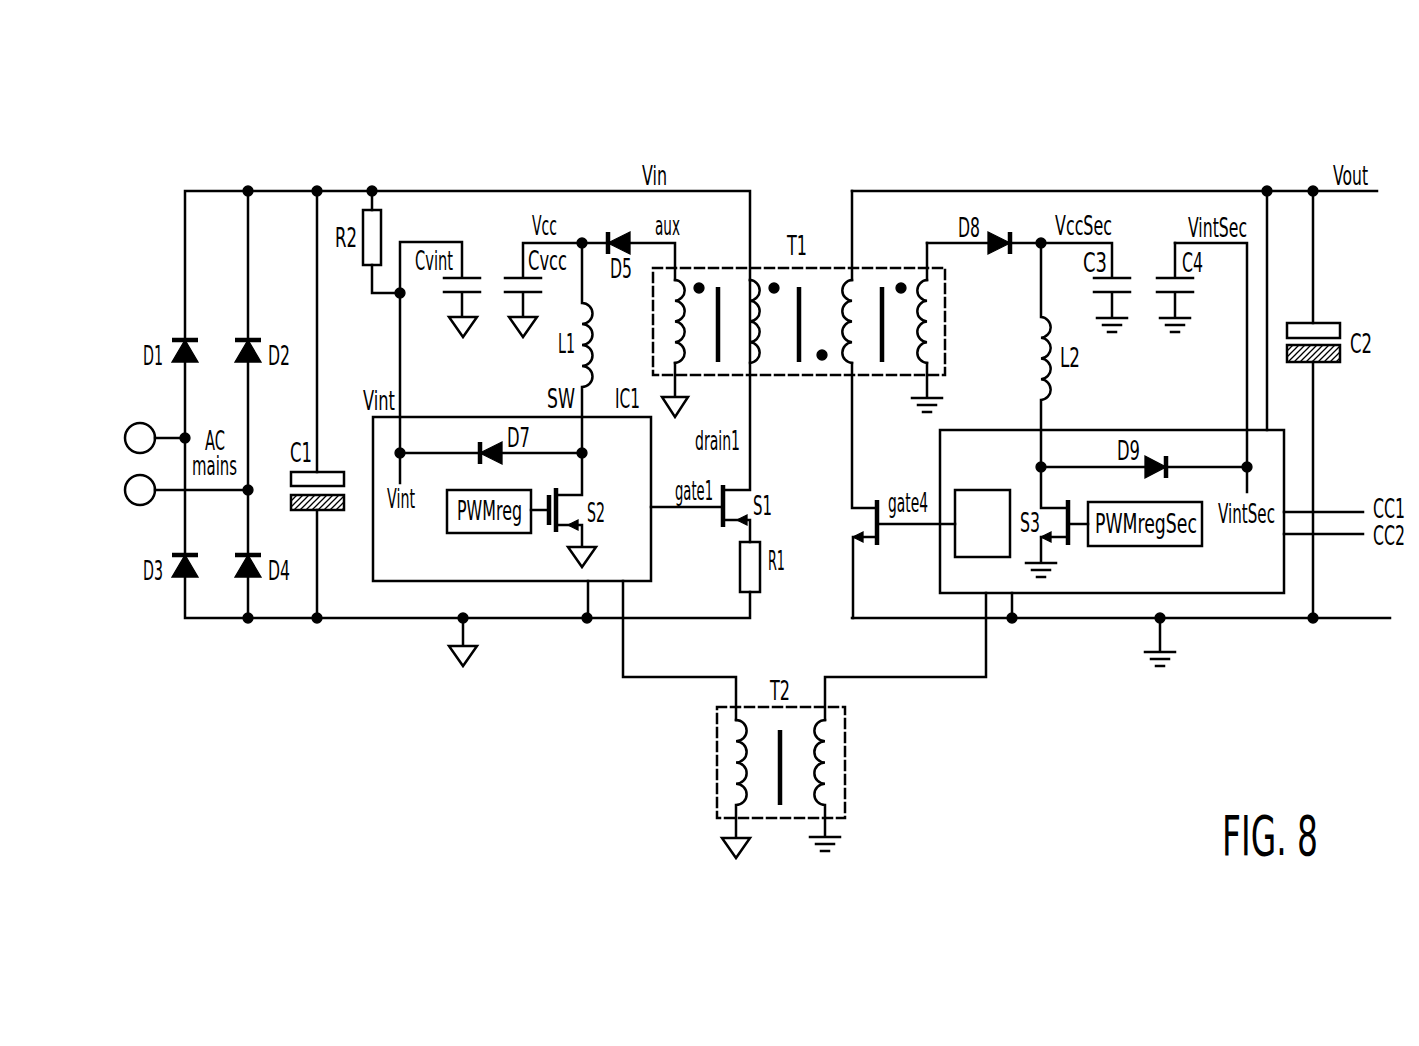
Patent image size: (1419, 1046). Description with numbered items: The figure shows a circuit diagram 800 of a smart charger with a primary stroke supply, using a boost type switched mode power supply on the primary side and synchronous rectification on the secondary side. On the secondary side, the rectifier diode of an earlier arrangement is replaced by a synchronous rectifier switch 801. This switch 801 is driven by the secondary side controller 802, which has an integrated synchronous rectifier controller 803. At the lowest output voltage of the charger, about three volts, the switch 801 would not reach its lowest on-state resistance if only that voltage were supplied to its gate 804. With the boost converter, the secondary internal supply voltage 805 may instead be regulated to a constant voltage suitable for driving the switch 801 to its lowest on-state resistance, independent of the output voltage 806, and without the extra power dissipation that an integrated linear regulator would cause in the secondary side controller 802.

The circuit diagram 800 is at (1376, 145).
The synchronous rectifier switch S4 801 is at (856, 538).
The secondary side controller IC2 802 is at (1170, 430).
The synchronous rectifier controller SRctrl 803 is at (955, 543).
The gate4 804 is at (868, 507).
The VintSec 805 is at (1180, 240).
The output voltage Vout 806 is at (1374, 193).